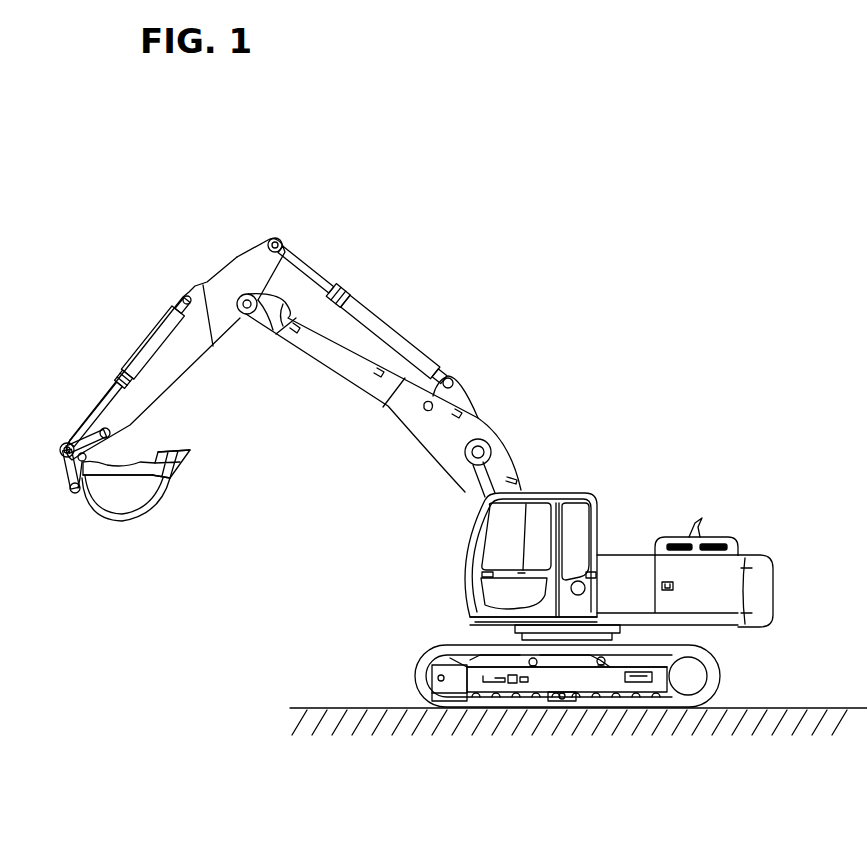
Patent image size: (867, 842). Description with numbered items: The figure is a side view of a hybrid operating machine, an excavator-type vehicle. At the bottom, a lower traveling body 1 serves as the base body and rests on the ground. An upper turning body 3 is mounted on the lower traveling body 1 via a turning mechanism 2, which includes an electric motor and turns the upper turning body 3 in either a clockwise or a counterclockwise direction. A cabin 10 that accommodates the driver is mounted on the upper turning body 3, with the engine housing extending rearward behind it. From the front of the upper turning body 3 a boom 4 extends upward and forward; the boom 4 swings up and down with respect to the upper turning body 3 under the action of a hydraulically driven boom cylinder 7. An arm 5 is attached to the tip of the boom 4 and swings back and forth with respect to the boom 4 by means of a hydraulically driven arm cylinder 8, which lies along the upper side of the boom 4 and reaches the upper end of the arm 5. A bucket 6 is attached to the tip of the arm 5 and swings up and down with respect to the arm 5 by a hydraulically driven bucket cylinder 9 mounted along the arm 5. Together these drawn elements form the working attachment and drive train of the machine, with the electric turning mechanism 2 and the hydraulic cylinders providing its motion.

The lower traveling body 1 is at (412, 680).
The turning mechanism 2 is at (620, 645).
The upper turning body 3 is at (630, 553).
The boom 4 is at (412, 420).
The arm 5 is at (190, 360).
The bucket 6 is at (122, 518).
The boom cylinder 7 is at (487, 483).
The arm cylinder 8 is at (403, 347).
The bucket cylinder 9 is at (147, 348).
The cabin 10 is at (588, 490).